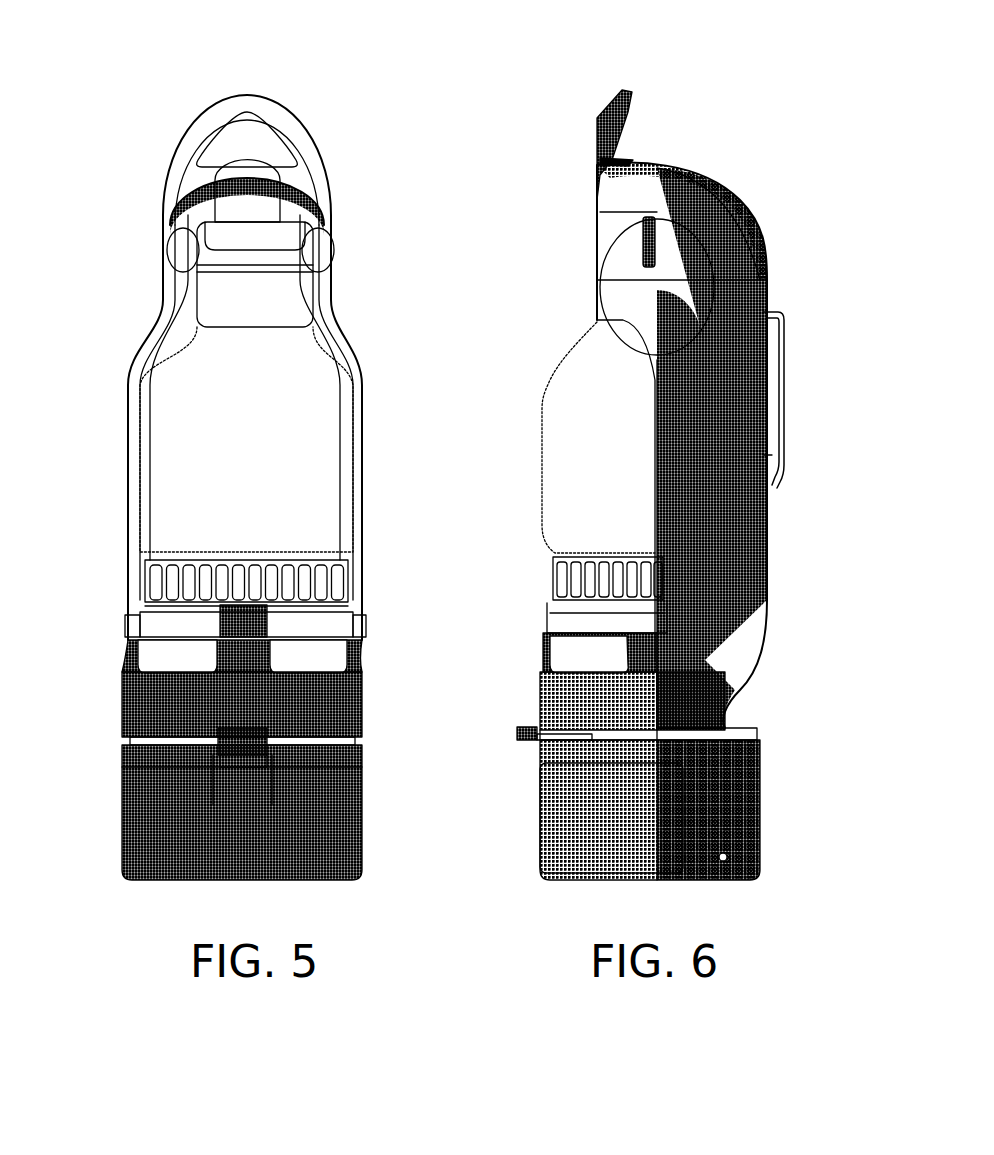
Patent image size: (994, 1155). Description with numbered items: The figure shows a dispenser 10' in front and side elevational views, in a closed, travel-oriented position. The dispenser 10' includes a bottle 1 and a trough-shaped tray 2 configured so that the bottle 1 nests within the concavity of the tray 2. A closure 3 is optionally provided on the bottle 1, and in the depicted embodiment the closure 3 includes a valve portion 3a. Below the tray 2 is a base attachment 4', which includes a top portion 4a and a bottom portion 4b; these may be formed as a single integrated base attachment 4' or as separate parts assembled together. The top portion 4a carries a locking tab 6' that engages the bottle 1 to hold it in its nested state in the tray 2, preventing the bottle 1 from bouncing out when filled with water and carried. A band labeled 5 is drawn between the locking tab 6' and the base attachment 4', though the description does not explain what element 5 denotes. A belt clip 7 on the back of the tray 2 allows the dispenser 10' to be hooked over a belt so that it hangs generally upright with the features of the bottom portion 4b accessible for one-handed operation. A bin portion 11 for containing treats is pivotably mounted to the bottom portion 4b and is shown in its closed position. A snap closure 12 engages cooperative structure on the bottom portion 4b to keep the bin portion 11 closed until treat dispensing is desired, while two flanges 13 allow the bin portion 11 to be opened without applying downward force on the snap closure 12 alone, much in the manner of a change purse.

In FIG. 5, the dispenser 10' is at (195, 453).
In FIG. 6, the dispenser 10' is at (612, 453).
In FIG. 5, the bottle 1 is at (170, 460).
In FIG. 6, the bottle 1 is at (560, 452).
In FIG. 5, the tray 2 is at (340, 357).
In FIG. 6, the tray 2 is at (737, 525).
In FIG. 5, the closure 3 is at (213, 298).
In FIG. 5, the valve portion 3a is at (250, 240).
In FIG. 6, the base attachment 4' is at (737, 761).
In FIG. 6, the top portion 4a is at (683, 695).
In FIG. 6, the bottom portion 4b is at (695, 787).
In FIG. 5, the collar 5 is at (400, 608).
In FIG. 6, the collar 5 is at (667, 632).
In FIG. 5, the locking tab 6' is at (200, 584).
In FIG. 6, the locking tab 6' is at (574, 565).
In FIG. 6, the belt clip 7 is at (776, 380).
In FIG. 5, the bin portion 11 is at (310, 797).
In FIG. 6, the bin portion 11 is at (555, 802).
In FIG. 5, the snap closure 12 is at (246, 730).
In FIG. 6, the snap closure 12 is at (246, 730).
In FIG. 5, the flanges 13 is at (313, 741).